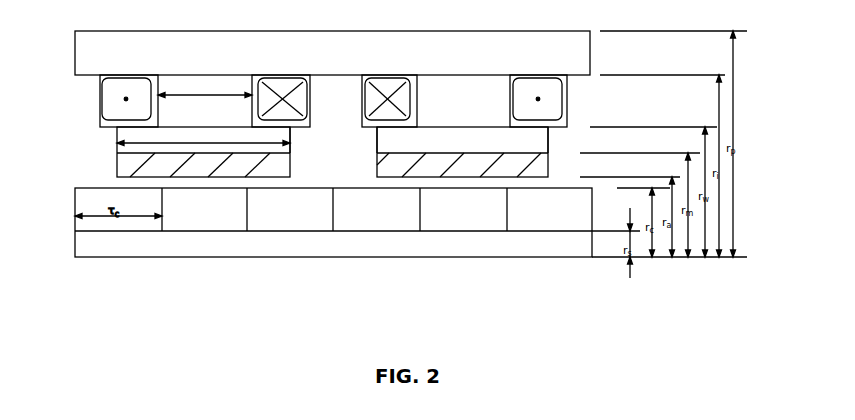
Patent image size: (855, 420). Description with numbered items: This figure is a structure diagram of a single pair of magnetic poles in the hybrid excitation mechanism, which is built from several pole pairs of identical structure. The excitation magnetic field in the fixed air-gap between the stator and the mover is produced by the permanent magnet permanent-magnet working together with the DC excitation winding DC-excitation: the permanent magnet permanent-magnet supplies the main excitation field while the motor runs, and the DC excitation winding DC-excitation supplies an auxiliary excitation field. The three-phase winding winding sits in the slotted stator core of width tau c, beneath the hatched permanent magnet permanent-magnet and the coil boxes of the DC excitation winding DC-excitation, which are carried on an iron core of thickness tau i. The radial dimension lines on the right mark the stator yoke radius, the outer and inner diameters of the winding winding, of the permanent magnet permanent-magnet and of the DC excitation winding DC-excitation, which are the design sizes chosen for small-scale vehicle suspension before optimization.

The three-phase windings winding is at (330, 185).
The permanent magnet permanent-magnet is at (332, 226).
The DC excitation winding DC-excitation is at (566, 205).